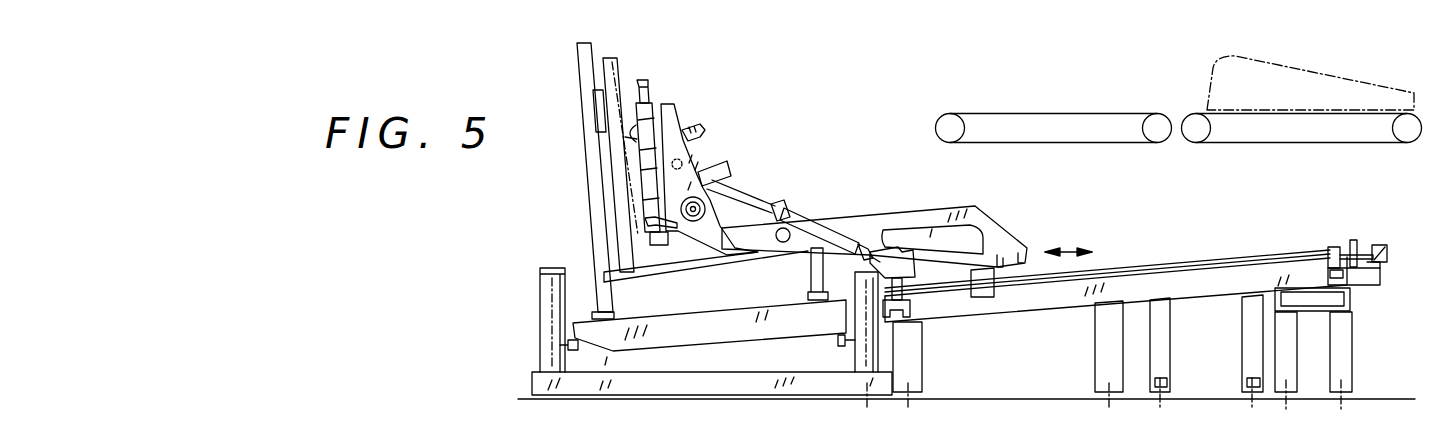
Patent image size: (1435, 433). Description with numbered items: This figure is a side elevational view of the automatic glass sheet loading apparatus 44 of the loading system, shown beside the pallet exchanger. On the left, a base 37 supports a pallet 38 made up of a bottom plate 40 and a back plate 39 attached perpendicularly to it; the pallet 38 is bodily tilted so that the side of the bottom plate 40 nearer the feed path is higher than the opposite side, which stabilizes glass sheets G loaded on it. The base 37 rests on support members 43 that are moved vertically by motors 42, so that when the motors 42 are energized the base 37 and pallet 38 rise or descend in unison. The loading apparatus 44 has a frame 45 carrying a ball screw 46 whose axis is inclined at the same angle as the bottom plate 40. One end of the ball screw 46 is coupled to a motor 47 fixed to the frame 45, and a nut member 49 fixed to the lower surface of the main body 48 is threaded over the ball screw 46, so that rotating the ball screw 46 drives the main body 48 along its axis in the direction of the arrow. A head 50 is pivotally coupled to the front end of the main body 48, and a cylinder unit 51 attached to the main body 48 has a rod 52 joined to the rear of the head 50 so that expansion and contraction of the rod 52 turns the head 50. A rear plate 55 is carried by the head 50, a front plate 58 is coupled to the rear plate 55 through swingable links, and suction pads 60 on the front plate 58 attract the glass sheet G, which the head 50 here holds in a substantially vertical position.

The base 37 is at (678, 337).
The pallet 38 is at (581, 203).
The back plate 39 is at (583, 74).
The bottom plate 40 is at (663, 268).
The motor 42 is at (550, 302).
The support member 43 is at (578, 349).
The loading apparatus 44 is at (923, 187).
The frame 45 is at (1068, 300).
The ball screw 46 is at (1154, 270).
The motor 47 is at (1375, 246).
The main body 48 is at (870, 220).
The nut member 49 is at (988, 292).
The head 50 is at (661, 152).
The cylinder unit 51 is at (786, 203).
The rod 52 is at (749, 195).
The rear plate 55 is at (685, 145).
The front plate 58 is at (646, 165).
The suction pad 60 is at (624, 128).
The glass sheet G is at (610, 75).